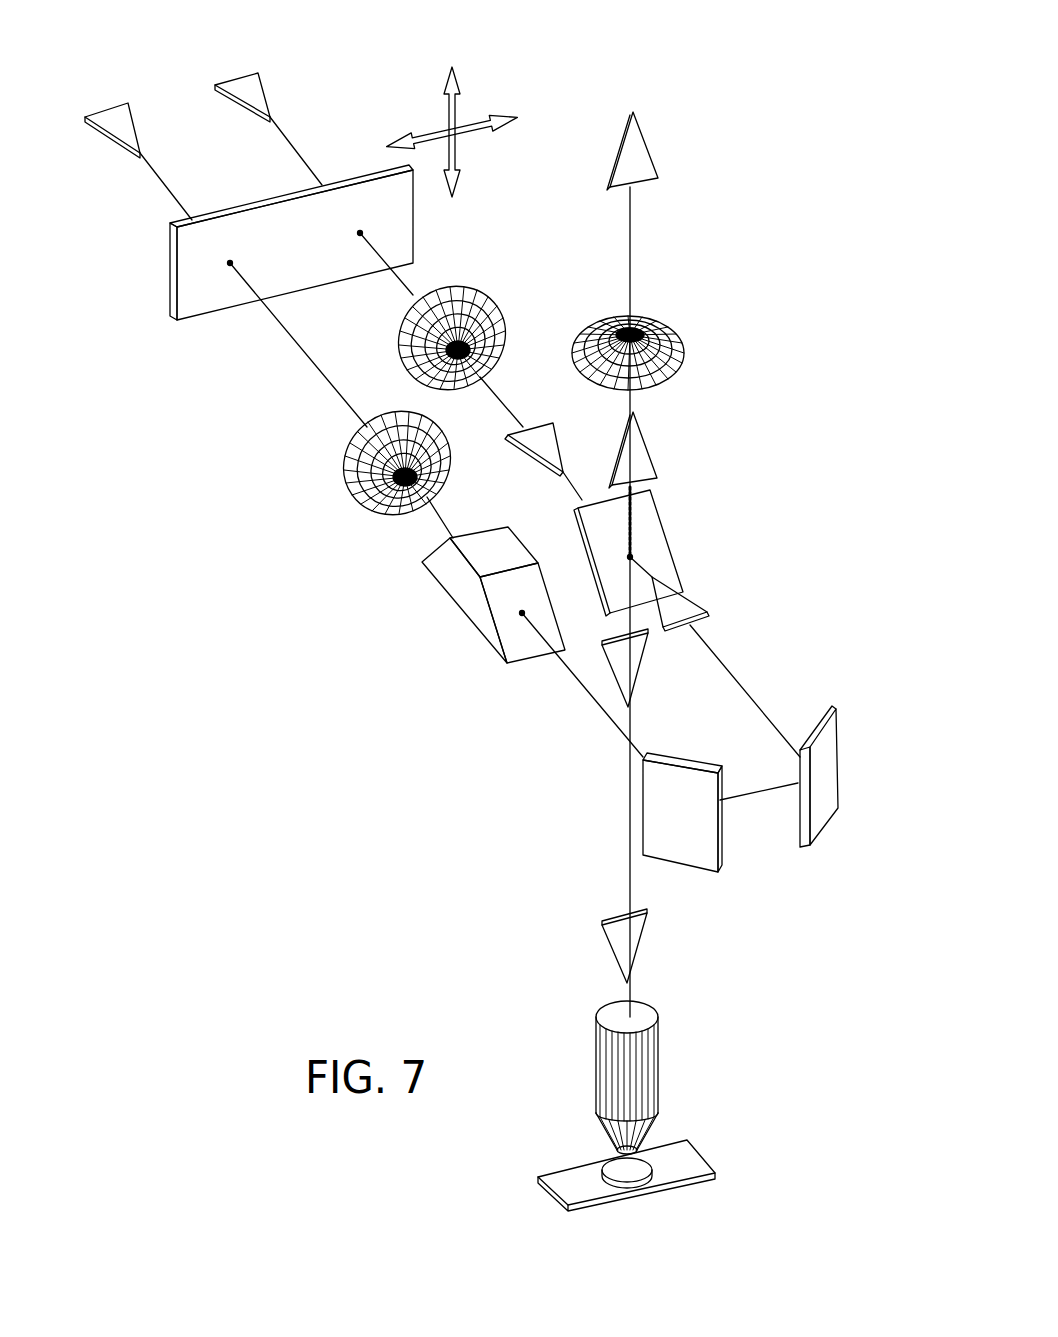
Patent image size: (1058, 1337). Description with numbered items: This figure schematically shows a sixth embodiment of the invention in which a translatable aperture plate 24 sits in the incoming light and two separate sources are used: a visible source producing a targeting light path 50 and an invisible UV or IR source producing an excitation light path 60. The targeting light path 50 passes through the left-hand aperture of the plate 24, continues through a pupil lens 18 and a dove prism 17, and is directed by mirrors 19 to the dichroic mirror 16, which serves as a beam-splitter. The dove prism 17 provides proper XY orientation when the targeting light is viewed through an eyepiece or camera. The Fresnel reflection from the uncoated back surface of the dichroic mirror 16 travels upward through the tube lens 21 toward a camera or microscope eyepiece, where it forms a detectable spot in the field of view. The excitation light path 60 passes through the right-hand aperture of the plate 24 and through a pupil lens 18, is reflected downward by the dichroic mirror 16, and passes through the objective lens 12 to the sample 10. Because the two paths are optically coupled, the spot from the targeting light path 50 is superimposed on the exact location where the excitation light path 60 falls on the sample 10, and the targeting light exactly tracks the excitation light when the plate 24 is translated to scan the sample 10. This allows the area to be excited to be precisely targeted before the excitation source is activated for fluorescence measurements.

The sample 10 is at (700, 1142).
The objective lens 12 is at (663, 1003).
The dichroic mirror 16 is at (665, 523).
The dove prism 17 is at (460, 613).
The pupil lens 18 is at (397, 365).
The mirrors 19 is at (727, 865).
The tube lens 21 is at (688, 328).
The aperture plate 24 is at (170, 320).
The targeting light path 50 is at (108, 117).
The excitation light path 60 is at (230, 77).